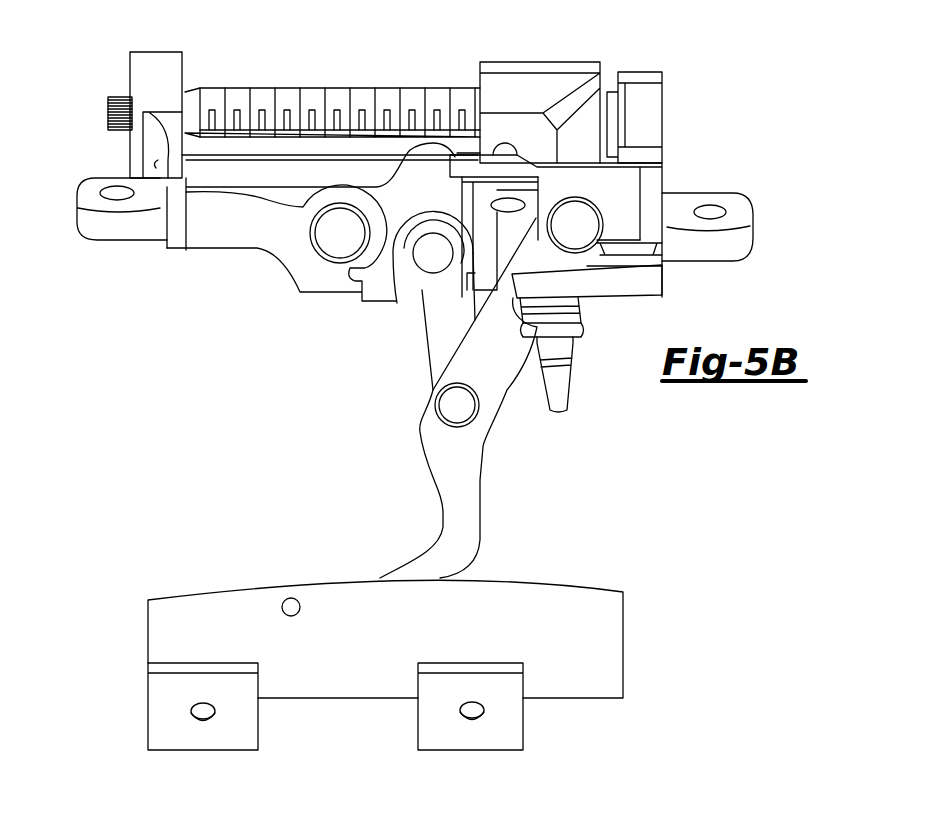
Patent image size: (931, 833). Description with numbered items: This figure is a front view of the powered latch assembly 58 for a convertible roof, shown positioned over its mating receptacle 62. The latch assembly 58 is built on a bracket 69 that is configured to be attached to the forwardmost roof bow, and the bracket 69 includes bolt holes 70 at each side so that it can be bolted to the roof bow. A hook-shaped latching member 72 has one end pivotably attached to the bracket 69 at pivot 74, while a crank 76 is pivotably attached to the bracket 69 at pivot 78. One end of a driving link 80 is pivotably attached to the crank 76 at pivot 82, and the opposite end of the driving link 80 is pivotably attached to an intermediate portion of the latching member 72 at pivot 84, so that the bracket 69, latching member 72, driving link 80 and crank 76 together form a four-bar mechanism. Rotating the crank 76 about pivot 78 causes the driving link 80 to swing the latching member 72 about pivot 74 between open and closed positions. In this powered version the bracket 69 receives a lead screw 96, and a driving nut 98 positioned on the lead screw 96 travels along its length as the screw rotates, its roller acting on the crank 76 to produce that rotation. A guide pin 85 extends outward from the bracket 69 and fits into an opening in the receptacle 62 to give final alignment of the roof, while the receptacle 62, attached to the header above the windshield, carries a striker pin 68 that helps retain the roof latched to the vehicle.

The latch assembly 58 is at (258, 366).
The receptacle 62 is at (603, 636).
The striker pin 68 is at (291, 598).
The bracket 69 is at (623, 185).
The bolt hole 70 is at (117, 193).
The latching member 72 is at (470, 481).
The pivot 74 is at (577, 237).
The crank 76 is at (413, 146).
The pivot 78 is at (332, 240).
The driving link 80 is at (443, 333).
The pivot 82 is at (432, 265).
The pivot 84 is at (463, 410).
The guide pin 85 is at (560, 390).
The lead screw 96 is at (230, 97).
The driving nut 98 is at (543, 82).